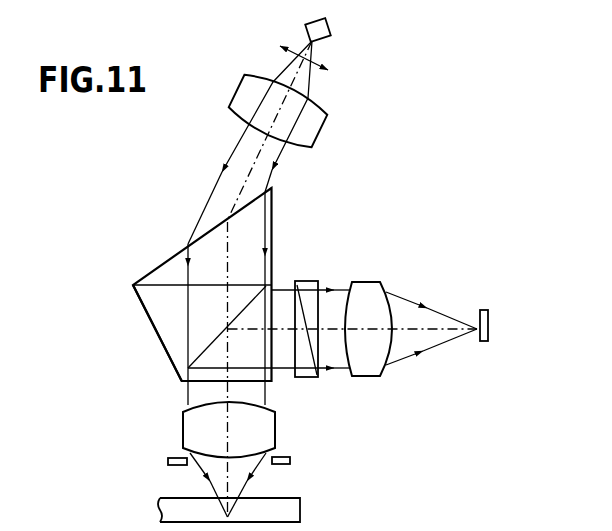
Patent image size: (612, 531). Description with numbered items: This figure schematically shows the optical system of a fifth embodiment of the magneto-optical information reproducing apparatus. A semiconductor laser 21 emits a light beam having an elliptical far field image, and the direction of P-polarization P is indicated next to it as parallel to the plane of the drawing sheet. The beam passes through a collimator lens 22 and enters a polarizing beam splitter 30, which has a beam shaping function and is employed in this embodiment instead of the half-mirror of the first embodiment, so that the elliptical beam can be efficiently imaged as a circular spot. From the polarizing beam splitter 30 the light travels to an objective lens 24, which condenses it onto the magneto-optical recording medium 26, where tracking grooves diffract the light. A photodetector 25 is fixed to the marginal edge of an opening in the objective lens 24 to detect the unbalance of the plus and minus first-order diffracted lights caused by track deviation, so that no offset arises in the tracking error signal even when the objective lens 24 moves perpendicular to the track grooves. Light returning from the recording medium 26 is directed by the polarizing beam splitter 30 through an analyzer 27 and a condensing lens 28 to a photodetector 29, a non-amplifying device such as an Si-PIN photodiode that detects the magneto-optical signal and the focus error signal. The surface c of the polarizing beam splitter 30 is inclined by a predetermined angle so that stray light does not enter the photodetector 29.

The semiconductor laser 21 is at (333, 37).
The collimator lens 22 is at (238, 86).
The objective lens 24 is at (183, 423).
The photodetector 25 is at (168, 461).
The magneto-optical recording medium 26 is at (302, 505).
The analyzer 27 is at (305, 280).
The condensing lens 28 is at (367, 280).
The photodetector 29 is at (483, 310).
The polarizing beam splitter 30 is at (150, 272).
The surface C of the polarizing beam splitter c is at (159, 338).
The direction of P-polarization P is at (316, 67).